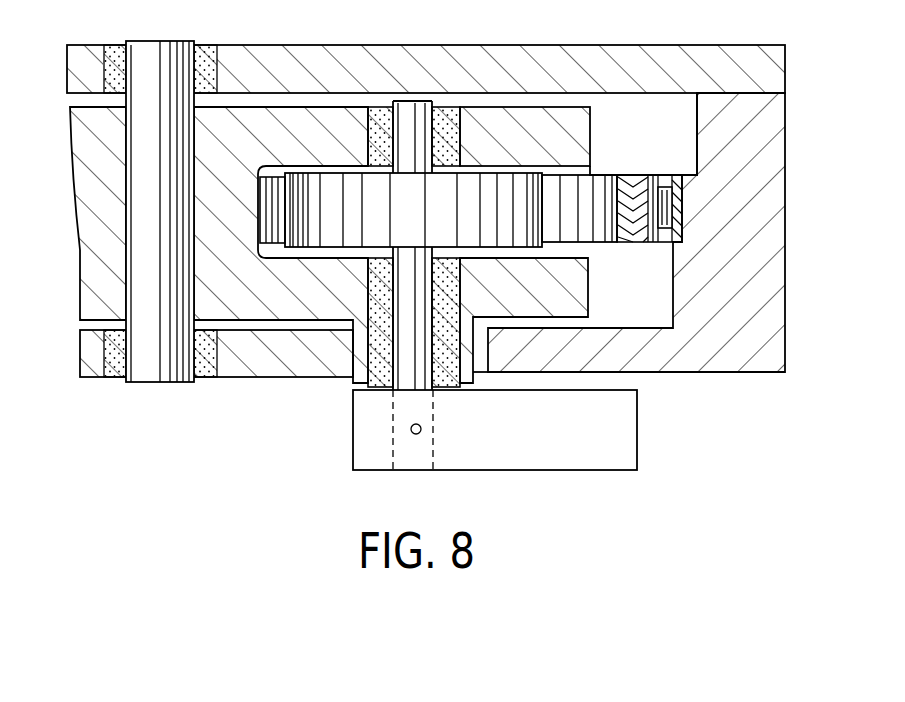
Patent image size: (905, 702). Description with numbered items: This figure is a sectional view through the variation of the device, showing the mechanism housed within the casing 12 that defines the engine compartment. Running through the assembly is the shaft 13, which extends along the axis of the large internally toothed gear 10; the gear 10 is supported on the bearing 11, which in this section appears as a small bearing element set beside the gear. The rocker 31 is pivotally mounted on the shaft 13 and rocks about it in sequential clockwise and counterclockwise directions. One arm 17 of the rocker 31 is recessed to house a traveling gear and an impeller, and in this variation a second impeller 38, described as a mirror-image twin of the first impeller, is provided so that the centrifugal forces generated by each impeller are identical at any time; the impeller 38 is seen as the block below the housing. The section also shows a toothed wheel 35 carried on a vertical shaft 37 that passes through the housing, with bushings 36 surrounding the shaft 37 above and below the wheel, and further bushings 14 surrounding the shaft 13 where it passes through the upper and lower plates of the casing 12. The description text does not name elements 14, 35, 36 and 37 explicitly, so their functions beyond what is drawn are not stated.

The internally toothed gear 10 is at (600, 220).
The bearing 11 is at (673, 200).
The casing 12 is at (750, 368).
The shaft 13 is at (158, 57).
The bushing 14 is at (218, 48).
The arm 17 is at (500, 105).
The rocker 31 is at (558, 118).
The gear 35 is at (332, 235).
The bushing 36 is at (440, 110).
The gear shaft 37 is at (405, 110).
The second impeller 38 is at (637, 457).